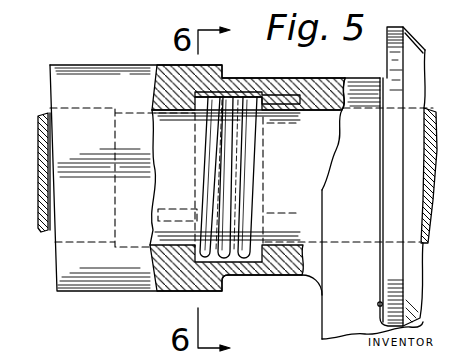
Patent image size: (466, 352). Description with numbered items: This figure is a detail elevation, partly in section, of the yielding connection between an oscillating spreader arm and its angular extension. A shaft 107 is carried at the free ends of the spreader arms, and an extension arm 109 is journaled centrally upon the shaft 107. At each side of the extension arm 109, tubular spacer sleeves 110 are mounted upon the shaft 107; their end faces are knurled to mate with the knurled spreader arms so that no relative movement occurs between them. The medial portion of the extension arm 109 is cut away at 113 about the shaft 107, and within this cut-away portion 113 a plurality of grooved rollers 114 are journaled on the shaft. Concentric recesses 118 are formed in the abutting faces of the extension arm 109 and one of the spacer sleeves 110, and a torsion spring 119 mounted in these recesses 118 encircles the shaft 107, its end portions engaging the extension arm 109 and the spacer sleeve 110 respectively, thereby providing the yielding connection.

The shaft 107 is at (47, 234).
The extension arm 109 is at (321, 328).
The tubular spacer sleeve 110 is at (85, 292).
The cut-away portion 113 is at (377, 302).
The grooved roller 114 is at (405, 33).
The concentric recess 118 is at (243, 260).
The torsion spring 119 is at (226, 93).